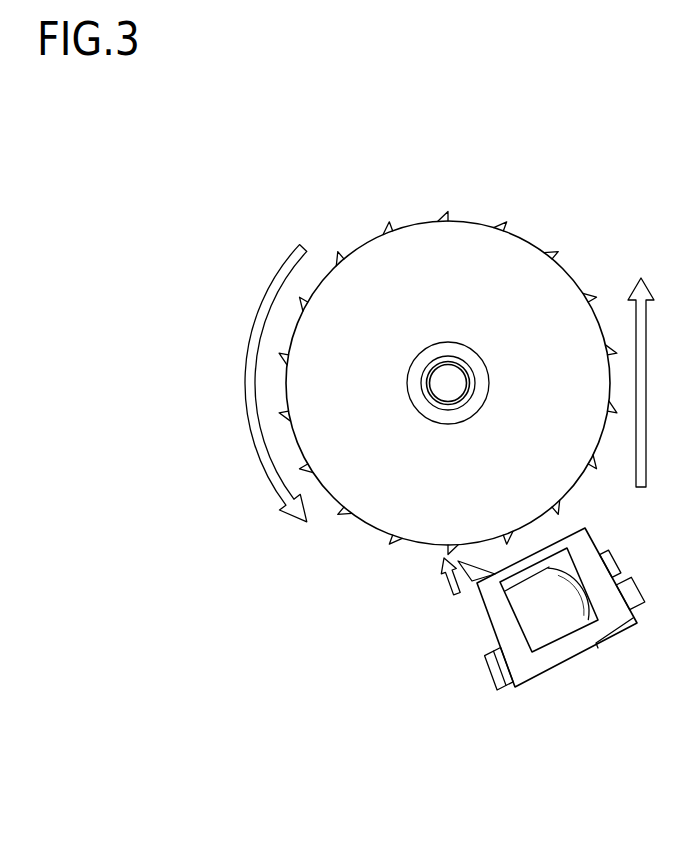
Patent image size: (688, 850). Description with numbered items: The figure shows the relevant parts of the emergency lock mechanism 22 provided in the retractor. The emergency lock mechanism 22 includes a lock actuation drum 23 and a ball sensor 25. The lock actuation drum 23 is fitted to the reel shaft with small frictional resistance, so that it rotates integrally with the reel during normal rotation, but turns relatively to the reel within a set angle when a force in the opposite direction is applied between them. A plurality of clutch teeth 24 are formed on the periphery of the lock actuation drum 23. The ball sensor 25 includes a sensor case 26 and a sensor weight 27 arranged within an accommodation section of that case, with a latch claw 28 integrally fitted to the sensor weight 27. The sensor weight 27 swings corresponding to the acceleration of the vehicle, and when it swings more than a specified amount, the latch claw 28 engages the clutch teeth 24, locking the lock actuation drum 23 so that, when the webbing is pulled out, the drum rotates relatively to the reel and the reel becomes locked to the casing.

The emergency lock mechanism 22 is at (198, 238).
The lock actuation drum 23 is at (487, 203).
The clutch teeth 24 is at (507, 226).
The ball sensor 25 is at (463, 693).
The sensor case 26 is at (552, 667).
The sensor weight 27 is at (547, 610).
The latch claw 28 is at (480, 566).